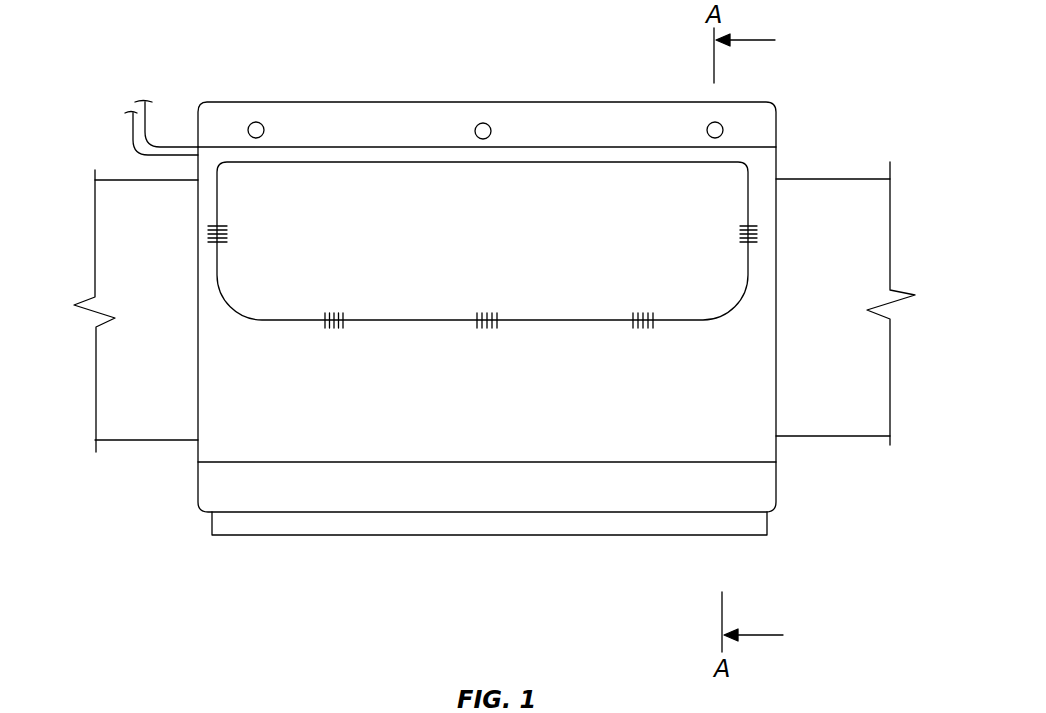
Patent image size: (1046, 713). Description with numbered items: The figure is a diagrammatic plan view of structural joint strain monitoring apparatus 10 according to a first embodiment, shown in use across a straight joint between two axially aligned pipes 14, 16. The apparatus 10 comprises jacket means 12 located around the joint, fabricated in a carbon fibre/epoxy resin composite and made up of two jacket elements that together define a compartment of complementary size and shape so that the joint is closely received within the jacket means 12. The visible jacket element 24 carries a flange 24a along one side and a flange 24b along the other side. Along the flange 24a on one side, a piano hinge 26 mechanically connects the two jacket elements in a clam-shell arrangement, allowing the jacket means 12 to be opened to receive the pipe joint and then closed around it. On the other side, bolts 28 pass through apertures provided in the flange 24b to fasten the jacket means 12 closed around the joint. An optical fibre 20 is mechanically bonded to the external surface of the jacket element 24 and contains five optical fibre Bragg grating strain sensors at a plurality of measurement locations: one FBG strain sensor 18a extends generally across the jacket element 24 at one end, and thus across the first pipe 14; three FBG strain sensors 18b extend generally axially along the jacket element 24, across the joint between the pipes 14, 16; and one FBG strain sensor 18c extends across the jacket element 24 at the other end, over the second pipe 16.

The structural joint strain monitoring apparatus 10 is at (302, 32).
The jacket means 12 is at (210, 478).
The first pipe 14 is at (155, 425).
The second pipe 16 is at (802, 423).
The FBG strain sensor 18a is at (205, 233).
The FBG strain sensors 18b is at (332, 328).
The FBG strain sensor 18c is at (750, 230).
The optical fibre 20 is at (152, 117).
The jacket element 24 is at (753, 172).
The flange 24a is at (688, 498).
The flange 24b is at (588, 113).
The piano hinge 26 is at (240, 520).
The bolts 28 is at (264, 128).